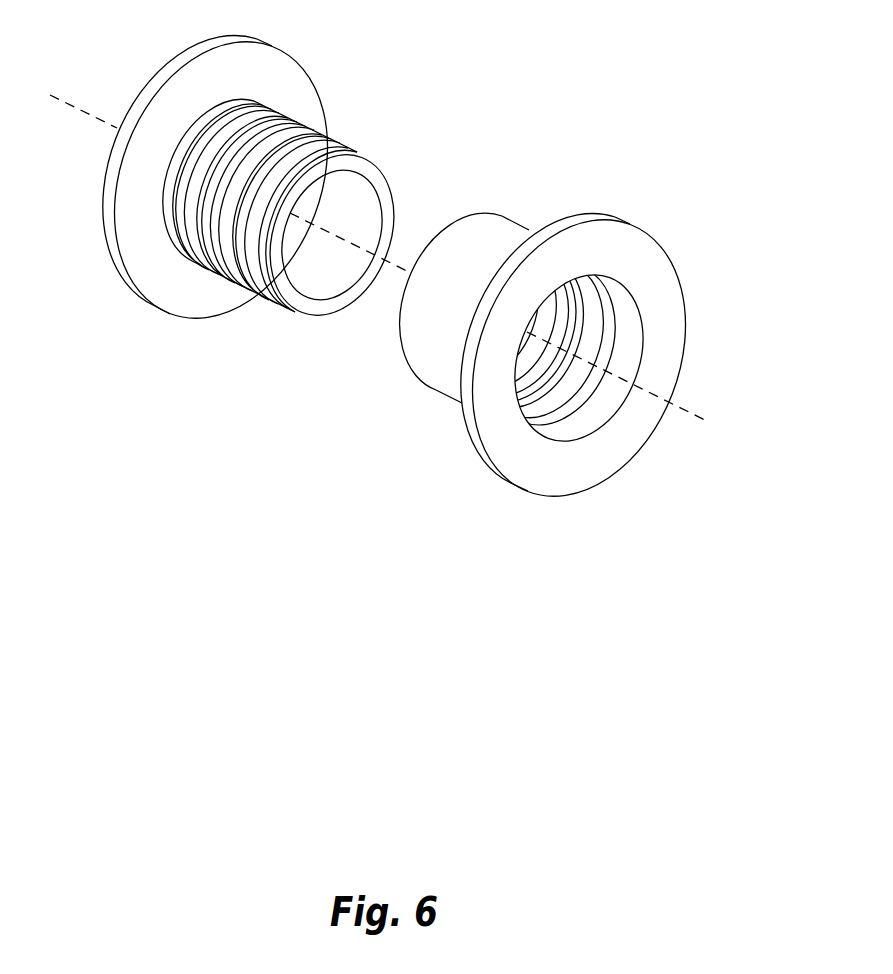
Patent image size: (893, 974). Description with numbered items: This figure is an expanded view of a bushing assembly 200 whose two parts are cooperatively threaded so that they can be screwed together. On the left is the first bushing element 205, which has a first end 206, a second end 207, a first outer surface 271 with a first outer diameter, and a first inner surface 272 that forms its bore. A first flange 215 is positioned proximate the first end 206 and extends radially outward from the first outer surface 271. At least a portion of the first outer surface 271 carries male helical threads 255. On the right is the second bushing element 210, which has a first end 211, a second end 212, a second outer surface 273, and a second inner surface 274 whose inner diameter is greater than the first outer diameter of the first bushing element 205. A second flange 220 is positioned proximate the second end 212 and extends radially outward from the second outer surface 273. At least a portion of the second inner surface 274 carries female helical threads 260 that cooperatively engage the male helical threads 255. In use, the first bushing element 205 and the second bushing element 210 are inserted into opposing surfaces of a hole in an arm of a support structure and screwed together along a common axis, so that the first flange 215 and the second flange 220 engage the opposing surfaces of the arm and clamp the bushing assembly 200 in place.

The bushing assembly 200 is at (590, 60).
The first bushing element 205 is at (269, 202).
The first end 206 is at (286, 224).
The second end 207 is at (383, 182).
The first flange 215 is at (253, 61).
The male helical threads 255 is at (240, 264).
The first outer surface 271 is at (270, 148).
The first inner surface 272 is at (315, 285).
The second bushing element 210 is at (539, 360).
The first end 211 is at (478, 210).
The second end 212 is at (629, 287).
The second flange 220 is at (619, 240).
The second outer surface 273 is at (511, 238).
The second inner surface 274 is at (548, 412).
The female helical threads 260 is at (584, 394).